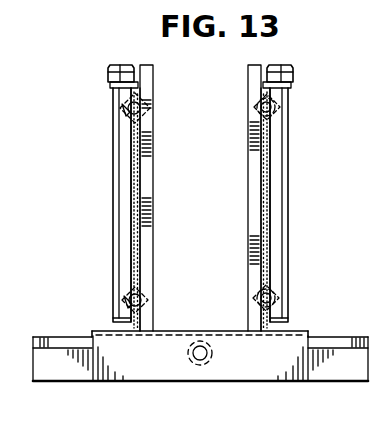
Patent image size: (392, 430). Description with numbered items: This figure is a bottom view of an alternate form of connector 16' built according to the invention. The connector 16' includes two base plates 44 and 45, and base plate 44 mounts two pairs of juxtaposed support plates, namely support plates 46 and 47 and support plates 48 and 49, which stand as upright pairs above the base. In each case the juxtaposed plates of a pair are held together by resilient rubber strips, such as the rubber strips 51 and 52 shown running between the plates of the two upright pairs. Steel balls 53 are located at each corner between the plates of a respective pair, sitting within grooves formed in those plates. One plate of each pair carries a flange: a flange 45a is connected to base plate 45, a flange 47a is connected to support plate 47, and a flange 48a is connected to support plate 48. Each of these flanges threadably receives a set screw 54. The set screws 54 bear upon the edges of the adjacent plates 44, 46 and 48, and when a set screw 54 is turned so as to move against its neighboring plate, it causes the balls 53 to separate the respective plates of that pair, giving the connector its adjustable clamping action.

The connector 16' is at (341, 241).
The base plate 44 is at (326, 340).
The base plate 45 is at (345, 372).
The flange 45a is at (224, 343).
The support plate 46 is at (279, 145).
The support plate 47 is at (249, 178).
The flange 47a is at (298, 72).
The support plate 48 is at (118, 190).
The flange 48a is at (110, 78).
The support plate 49 is at (149, 160).
The resilient rubber strip 51 is at (276, 213).
The resilient rubber strip 52 is at (126, 238).
The steel ball 53 is at (126, 114).
The set screw 54 is at (122, 66).